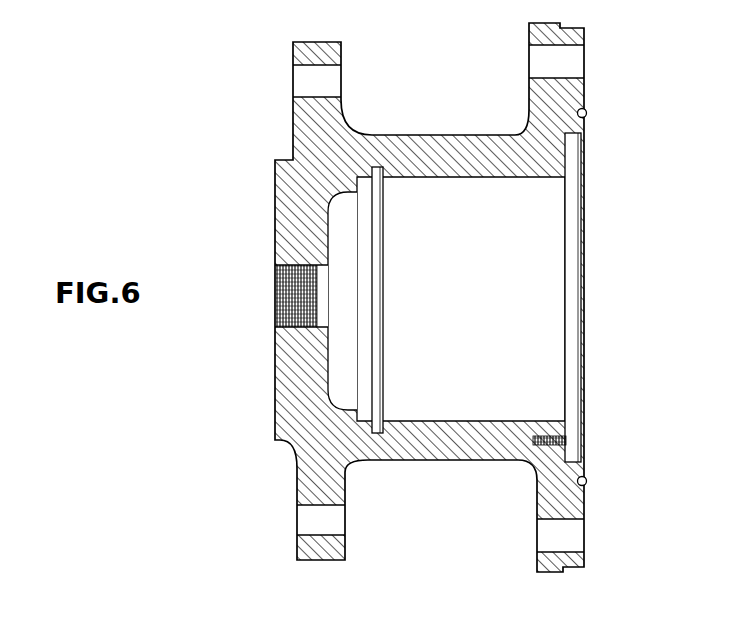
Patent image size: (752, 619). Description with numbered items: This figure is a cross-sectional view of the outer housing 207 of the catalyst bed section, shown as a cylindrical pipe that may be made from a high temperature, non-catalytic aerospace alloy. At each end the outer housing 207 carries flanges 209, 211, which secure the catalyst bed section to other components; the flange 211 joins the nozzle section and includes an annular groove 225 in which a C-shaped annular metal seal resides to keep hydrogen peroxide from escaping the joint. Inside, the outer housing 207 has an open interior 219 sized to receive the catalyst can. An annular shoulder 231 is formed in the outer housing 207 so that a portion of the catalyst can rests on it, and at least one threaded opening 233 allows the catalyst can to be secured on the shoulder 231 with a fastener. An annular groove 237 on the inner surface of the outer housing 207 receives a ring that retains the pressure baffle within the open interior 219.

The outer housing 207 is at (238, 168).
The flange 209 is at (318, 488).
The flange 211 is at (542, 490).
The open interior 219 is at (537, 258).
The annular groove 225 is at (586, 482).
The annular shoulder 231 is at (572, 153).
The threaded opening 233 is at (583, 442).
The annular groove 237 is at (378, 425).